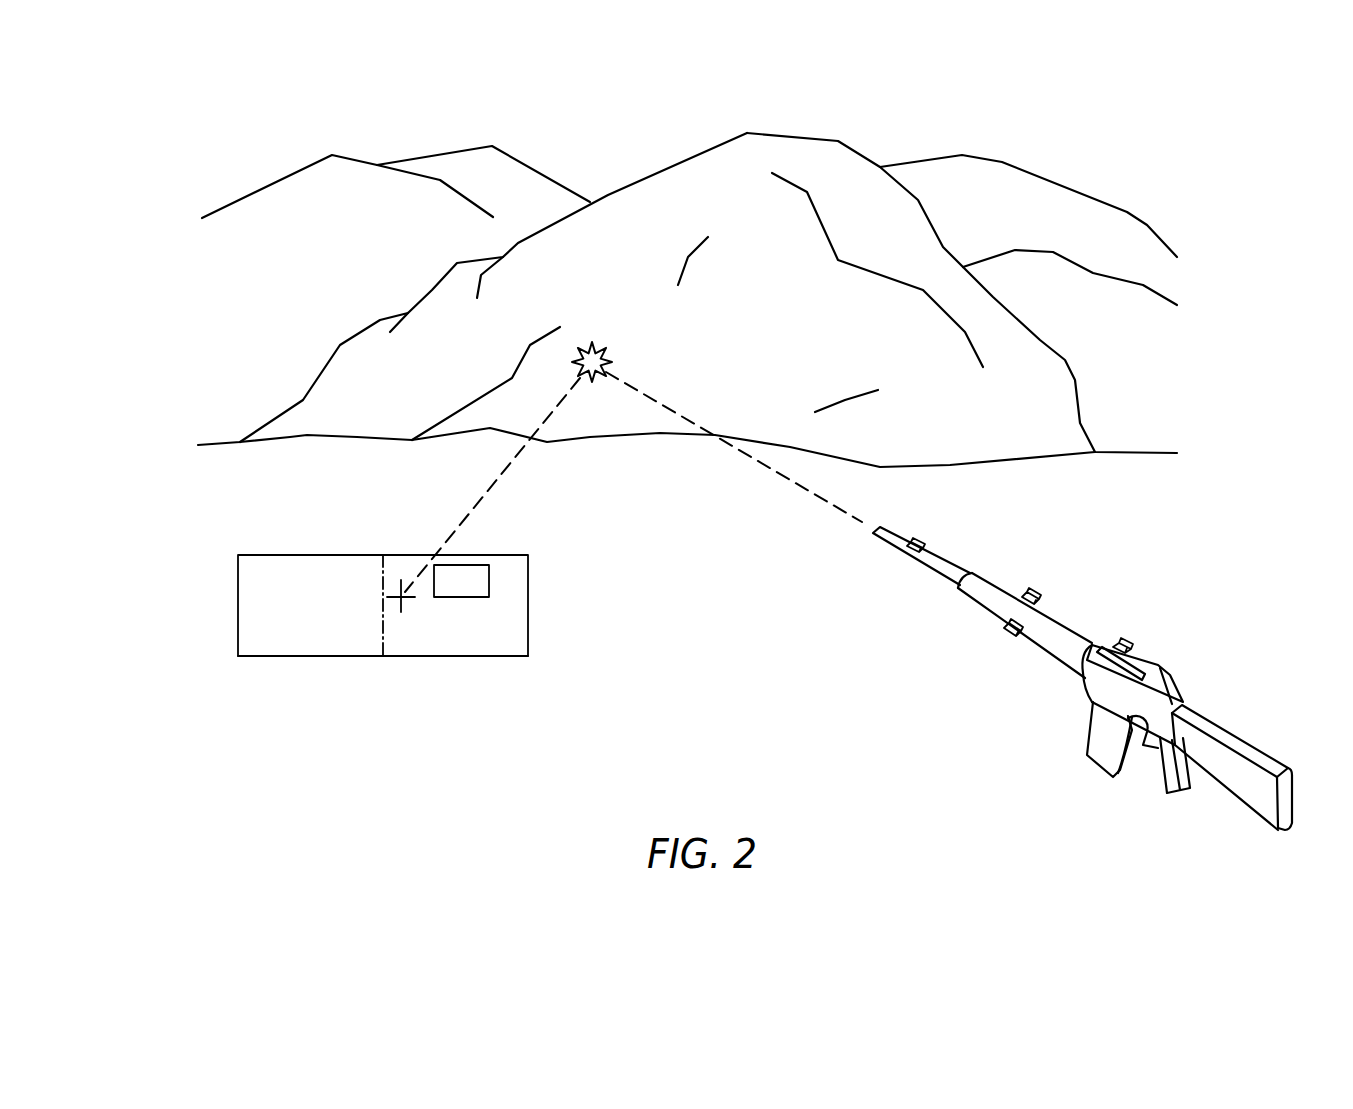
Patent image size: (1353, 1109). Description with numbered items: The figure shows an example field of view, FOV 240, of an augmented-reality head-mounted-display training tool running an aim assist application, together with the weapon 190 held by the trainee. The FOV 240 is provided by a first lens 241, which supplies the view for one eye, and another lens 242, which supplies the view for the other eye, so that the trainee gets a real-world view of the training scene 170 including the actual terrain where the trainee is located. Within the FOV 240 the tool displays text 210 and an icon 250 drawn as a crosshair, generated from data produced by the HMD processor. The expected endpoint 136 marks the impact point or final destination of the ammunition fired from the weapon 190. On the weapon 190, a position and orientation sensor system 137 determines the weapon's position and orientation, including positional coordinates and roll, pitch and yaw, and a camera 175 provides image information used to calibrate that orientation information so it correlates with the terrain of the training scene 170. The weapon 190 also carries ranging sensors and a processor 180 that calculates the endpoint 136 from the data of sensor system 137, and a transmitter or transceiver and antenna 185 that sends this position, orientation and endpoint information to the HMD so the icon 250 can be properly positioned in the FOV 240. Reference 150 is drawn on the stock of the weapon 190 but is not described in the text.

The training scene 170 is at (795, 136).
The expected endpoint 136 is at (612, 357).
The icon 250 is at (393, 585).
The text 210 is at (462, 565).
The FOV 240 is at (385, 616).
The first lens 241 is at (238, 598).
The lens 242 is at (528, 580).
The camera 175 is at (920, 543).
The position and orientation sensor system 137 is at (1035, 593).
The transmitter or transceiver and antenna 185 is at (1008, 635).
The processor 180 is at (1161, 626).
The stock 150 is at (1218, 722).
The weapon 190 is at (1088, 665).